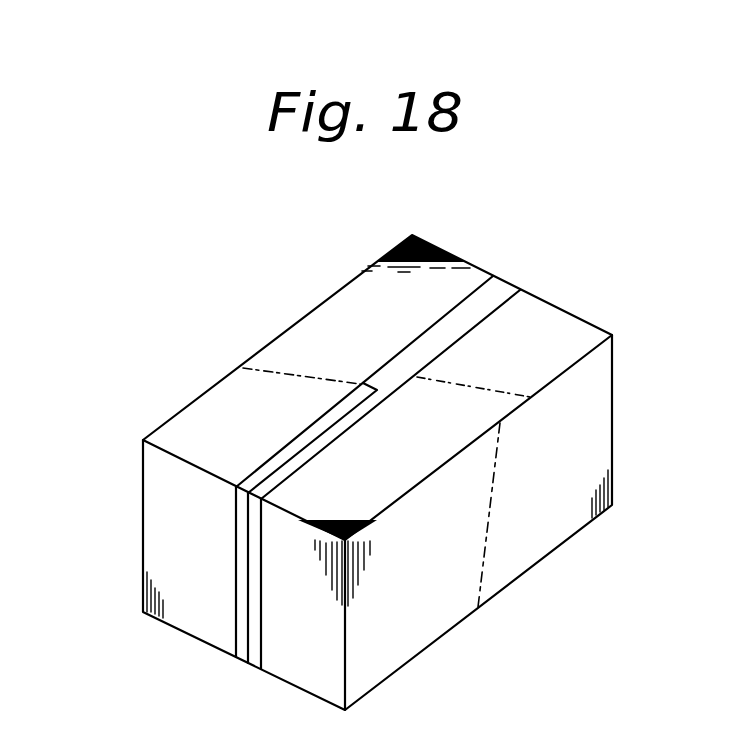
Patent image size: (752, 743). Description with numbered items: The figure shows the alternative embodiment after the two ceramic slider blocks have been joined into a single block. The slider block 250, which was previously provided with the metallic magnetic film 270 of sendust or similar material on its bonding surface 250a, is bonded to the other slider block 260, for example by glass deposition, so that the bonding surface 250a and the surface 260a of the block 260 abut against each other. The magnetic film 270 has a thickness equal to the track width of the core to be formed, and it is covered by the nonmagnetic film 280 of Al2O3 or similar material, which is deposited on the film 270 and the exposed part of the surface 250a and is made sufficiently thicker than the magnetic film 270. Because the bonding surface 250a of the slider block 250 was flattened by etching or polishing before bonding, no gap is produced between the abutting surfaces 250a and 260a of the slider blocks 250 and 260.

The slider block 250 is at (468, 278).
The bonding surface 250a is at (412, 350).
The slider block 260 is at (588, 338).
The bonding surface 260a is at (422, 372).
The magnetic film 270 is at (243, 611).
The nonmagnetic film 280 is at (501, 298).